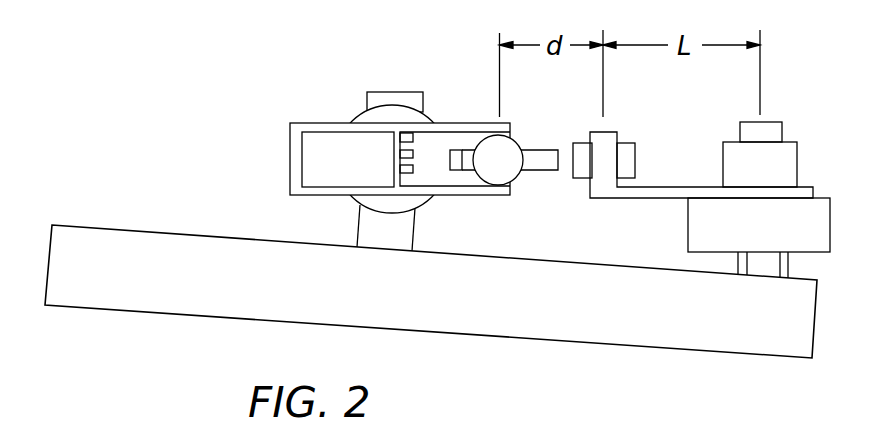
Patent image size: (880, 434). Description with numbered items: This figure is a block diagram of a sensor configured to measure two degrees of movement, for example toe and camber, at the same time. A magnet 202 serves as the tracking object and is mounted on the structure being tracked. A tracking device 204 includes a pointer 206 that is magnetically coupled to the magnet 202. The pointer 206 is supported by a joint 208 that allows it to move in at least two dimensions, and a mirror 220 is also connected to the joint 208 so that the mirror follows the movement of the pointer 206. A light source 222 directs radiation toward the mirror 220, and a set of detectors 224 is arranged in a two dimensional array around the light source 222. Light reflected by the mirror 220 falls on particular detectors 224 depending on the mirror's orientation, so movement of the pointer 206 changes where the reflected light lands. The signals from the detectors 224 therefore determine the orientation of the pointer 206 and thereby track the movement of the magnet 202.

The magnet 202 is at (633, 161).
The tracking device 204 is at (425, 119).
The pointer 206 is at (540, 150).
The joint 208 is at (520, 177).
The mirror 220 is at (457, 170).
The light source 222 is at (413, 161).
The set of detectors 224 is at (413, 173).